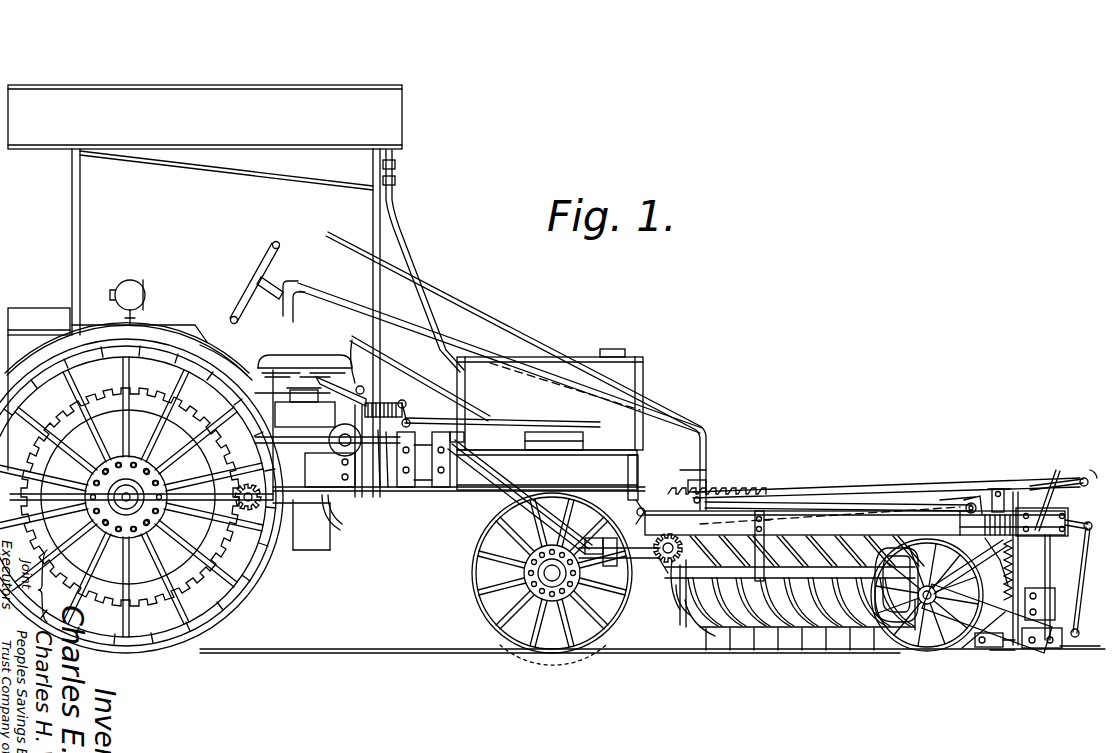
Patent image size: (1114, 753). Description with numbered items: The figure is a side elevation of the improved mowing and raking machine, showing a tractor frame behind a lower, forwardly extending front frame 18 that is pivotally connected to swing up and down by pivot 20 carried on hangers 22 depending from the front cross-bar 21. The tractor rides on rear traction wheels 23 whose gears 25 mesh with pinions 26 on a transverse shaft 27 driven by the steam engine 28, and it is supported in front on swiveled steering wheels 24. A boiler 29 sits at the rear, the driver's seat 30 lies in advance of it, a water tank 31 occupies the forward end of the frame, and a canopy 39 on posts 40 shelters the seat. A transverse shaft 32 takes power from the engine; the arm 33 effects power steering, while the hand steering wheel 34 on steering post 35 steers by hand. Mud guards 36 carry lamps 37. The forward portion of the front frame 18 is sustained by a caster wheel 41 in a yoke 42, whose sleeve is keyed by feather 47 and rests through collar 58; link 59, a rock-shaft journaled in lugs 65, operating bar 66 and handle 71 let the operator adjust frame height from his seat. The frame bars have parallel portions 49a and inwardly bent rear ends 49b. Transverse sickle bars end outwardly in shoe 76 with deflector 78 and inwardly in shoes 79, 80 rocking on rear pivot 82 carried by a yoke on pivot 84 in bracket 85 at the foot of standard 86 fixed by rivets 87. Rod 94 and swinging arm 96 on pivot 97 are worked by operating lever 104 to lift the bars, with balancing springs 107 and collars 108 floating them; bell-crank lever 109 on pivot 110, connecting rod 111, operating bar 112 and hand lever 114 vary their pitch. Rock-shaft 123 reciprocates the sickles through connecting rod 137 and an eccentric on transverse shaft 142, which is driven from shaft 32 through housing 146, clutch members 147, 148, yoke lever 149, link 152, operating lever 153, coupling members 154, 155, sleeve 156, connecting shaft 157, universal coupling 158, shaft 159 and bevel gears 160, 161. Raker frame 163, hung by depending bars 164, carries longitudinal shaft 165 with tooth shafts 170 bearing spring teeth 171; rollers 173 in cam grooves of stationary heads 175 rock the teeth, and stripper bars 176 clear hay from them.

The front or implement frame 18 is at (845, 500).
The pivot 20 is at (645, 505).
The front cross-bar 21 is at (640, 470).
The hangers 22 is at (615, 470).
The rear traction wheels 23 is at (330, 592).
The steering wheels 24 is at (480, 618).
The gears 25 is at (160, 600).
The pinions 26 is at (240, 512).
The transverse shaft 27 is at (250, 488).
The steam engine 28 is at (333, 383).
The boiler 29 is at (20, 315).
The driver's seat 30 is at (200, 326).
The water tank 31 is at (630, 357).
The transverse shaft 32 is at (338, 452).
The arm or lever 33 is at (327, 405).
The hand steering wheel 34 is at (272, 243).
The steering post 35 is at (418, 375).
The mud guards or fenders 36 is at (228, 362).
The lamps 37 is at (146, 288).
The canopy or top 39 is at (402, 98).
The posts 40 is at (72, 182).
The caster wheel 41 is at (885, 622).
The yoke 42 is at (971, 569).
The feather or key 47 is at (379, 470).
The parallel portion of bar 49a is at (1022, 505).
The inwardly bent rear end portion of bar 49b is at (735, 512).
The collar or flange 58 is at (927, 595).
The link 59 is at (965, 515).
The lugs 65 is at (968, 500).
The operating bar 66 is at (890, 500).
The handle 71 is at (500, 372).
The shoe 76 is at (1080, 648).
The deflector 78 is at (978, 650).
The shoe 79 is at (1005, 648).
The shoe 80 is at (1002, 671).
The rear pivot 82 is at (984, 652).
The pivot 84 is at (1040, 648).
The bracket 85 is at (1055, 600).
The standard 86 is at (1040, 545).
The rivets 87 is at (1048, 493).
The rod 94 is at (820, 490).
The swinging arm 96 is at (710, 470).
The pivot 97 is at (855, 511).
The operating lever 104 is at (515, 335).
The balancing springs 107 is at (987, 618).
The collars 108 is at (965, 630).
The bell-crank lever 109 is at (1063, 469).
The pivot 110 is at (1080, 518).
The connecting rod 111 is at (1082, 585).
The operating bar 112 is at (996, 489).
The hand lever 114 is at (460, 350).
The rock-shaft 123 is at (1045, 570).
The connecting rod 137 is at (942, 498).
The transverse shaft 142 is at (653, 595).
The housing 146 is at (325, 505).
The clutch member 147 is at (387, 480).
The clutch member 148 is at (404, 487).
The yoke lever 149 is at (410, 417).
The link 152 is at (388, 403).
The operating lever 153 is at (300, 372).
The universal coupling member 154 is at (420, 480).
The universal coupling member 155 is at (441, 487).
The sleeve 156 is at (480, 462).
The connecting shaft 157 is at (516, 501).
The universal coupling 158 is at (655, 552).
The shaft 159 is at (660, 562).
The bevel gear 160 is at (672, 570).
The bevel gear 161 is at (686, 590).
The raker frame 163 is at (700, 618).
The depending bars 164 is at (766, 515).
The longitudinal shaft 165 is at (850, 568).
The shafts 170 is at (760, 628).
The spring teeth 171 is at (808, 630).
The rollers 173 is at (905, 632).
The stationary heads 175 is at (710, 634).
The stripper bars 176 is at (745, 632).